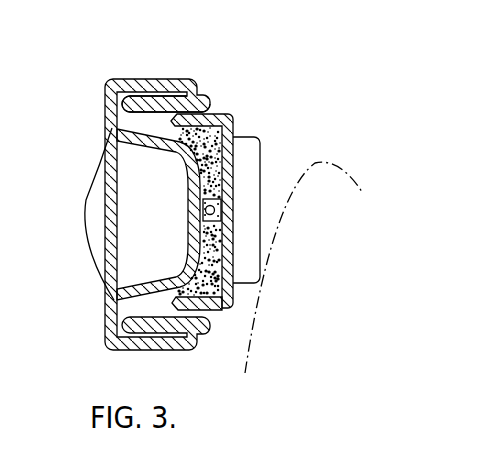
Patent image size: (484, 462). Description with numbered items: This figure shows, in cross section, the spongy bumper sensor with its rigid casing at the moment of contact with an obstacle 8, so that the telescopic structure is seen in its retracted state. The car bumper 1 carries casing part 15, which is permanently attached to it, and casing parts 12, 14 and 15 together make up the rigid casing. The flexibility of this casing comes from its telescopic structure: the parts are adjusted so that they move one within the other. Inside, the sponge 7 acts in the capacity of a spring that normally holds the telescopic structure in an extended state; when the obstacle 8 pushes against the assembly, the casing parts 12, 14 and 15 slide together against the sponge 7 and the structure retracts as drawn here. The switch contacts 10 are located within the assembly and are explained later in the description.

The car bumper 1 is at (100, 192).
The sponge 7 is at (173, 300).
The obstacle 8 is at (247, 345).
The switch contacts 10 is at (203, 218).
The rigid casing part 12 is at (232, 124).
The rigid casing part 14 is at (150, 107).
The rigid casing part 15 is at (110, 112).